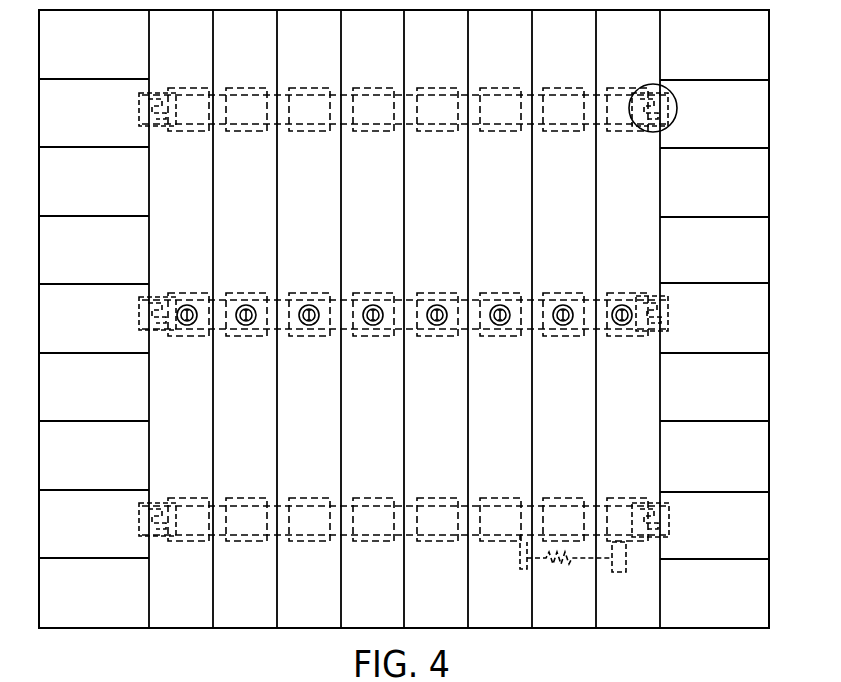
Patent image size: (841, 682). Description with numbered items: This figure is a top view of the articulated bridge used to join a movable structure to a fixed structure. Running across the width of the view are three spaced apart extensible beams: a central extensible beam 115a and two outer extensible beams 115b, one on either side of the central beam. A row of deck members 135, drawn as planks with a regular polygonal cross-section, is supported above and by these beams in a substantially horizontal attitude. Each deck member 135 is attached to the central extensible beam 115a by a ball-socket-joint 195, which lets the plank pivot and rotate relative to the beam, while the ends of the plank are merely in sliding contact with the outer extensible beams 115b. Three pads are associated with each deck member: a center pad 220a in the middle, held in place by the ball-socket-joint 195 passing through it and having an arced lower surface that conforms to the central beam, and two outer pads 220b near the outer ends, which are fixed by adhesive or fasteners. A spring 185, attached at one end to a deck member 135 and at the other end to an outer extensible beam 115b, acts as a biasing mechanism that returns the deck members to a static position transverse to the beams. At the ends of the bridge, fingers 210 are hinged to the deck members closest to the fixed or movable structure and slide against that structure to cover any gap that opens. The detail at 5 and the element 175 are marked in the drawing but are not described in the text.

The circled detail region 5 is at (677, 107).
The central extensible beam 115a is at (256, 293).
The outer extensible beams 115b is at (248, 87).
The deck members 135 is at (581, 223).
The connector 175 is at (670, 305).
The spring 185 is at (565, 567).
The ball-socket-joints 195 is at (373, 293).
The fingers 210 is at (726, 256).
The center pad 220a is at (508, 290).
The outer pads 220b is at (509, 87).